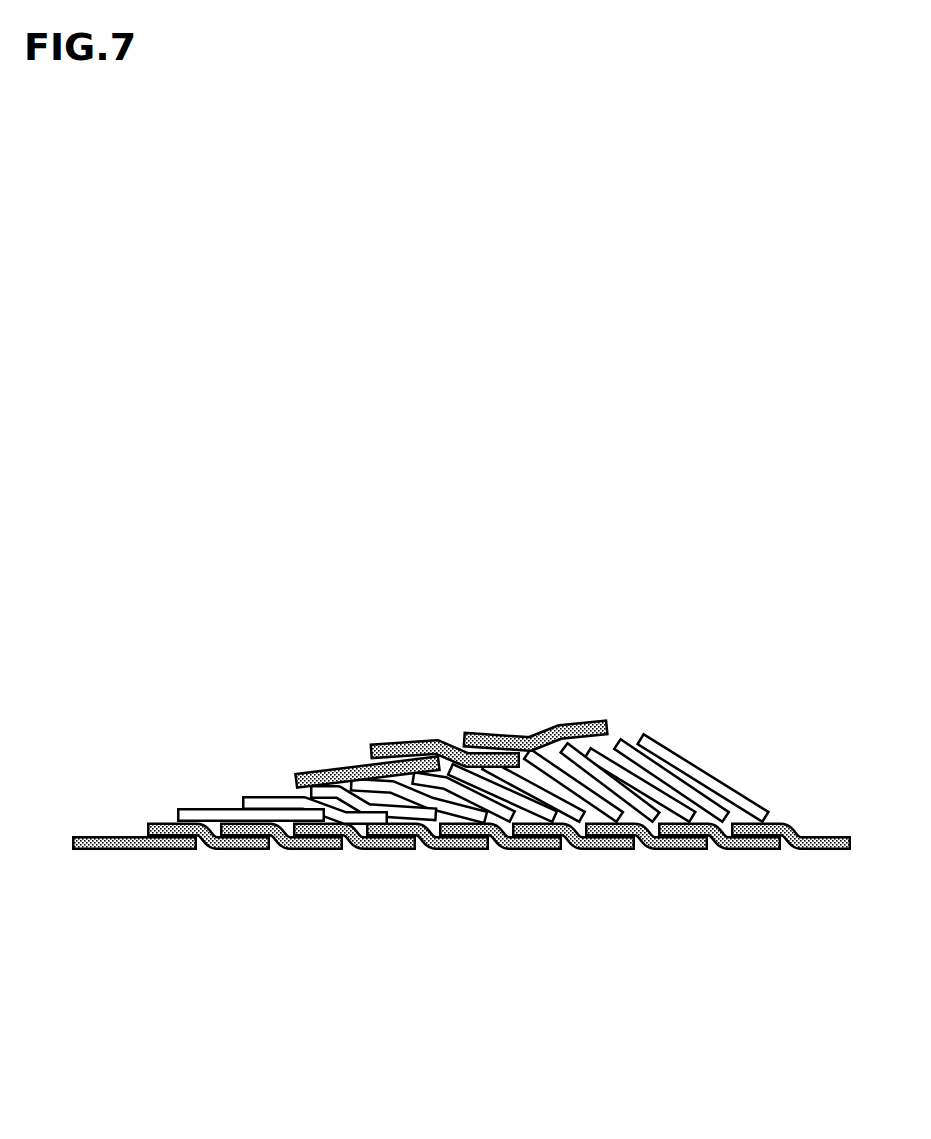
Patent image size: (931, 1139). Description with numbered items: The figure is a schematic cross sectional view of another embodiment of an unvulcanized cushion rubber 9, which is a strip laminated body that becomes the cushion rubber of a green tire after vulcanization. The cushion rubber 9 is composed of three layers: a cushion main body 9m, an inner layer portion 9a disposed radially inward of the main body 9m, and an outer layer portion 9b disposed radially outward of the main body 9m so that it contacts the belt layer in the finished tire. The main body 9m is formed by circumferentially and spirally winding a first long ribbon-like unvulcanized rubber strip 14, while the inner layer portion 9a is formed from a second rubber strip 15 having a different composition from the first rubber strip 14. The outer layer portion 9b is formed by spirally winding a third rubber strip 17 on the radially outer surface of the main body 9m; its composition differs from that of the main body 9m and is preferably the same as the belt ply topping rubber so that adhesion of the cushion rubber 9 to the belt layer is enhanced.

The cushion rubber 9 is at (466, 821).
The inner layer portion 9a is at (466, 937).
The cushion main body 9m is at (498, 829).
The outer layer portion 9b is at (411, 794).
The first rubber strip 14 is at (693, 767).
The second rubber strip 15 is at (747, 848).
The third rubber strip 17 is at (425, 735).